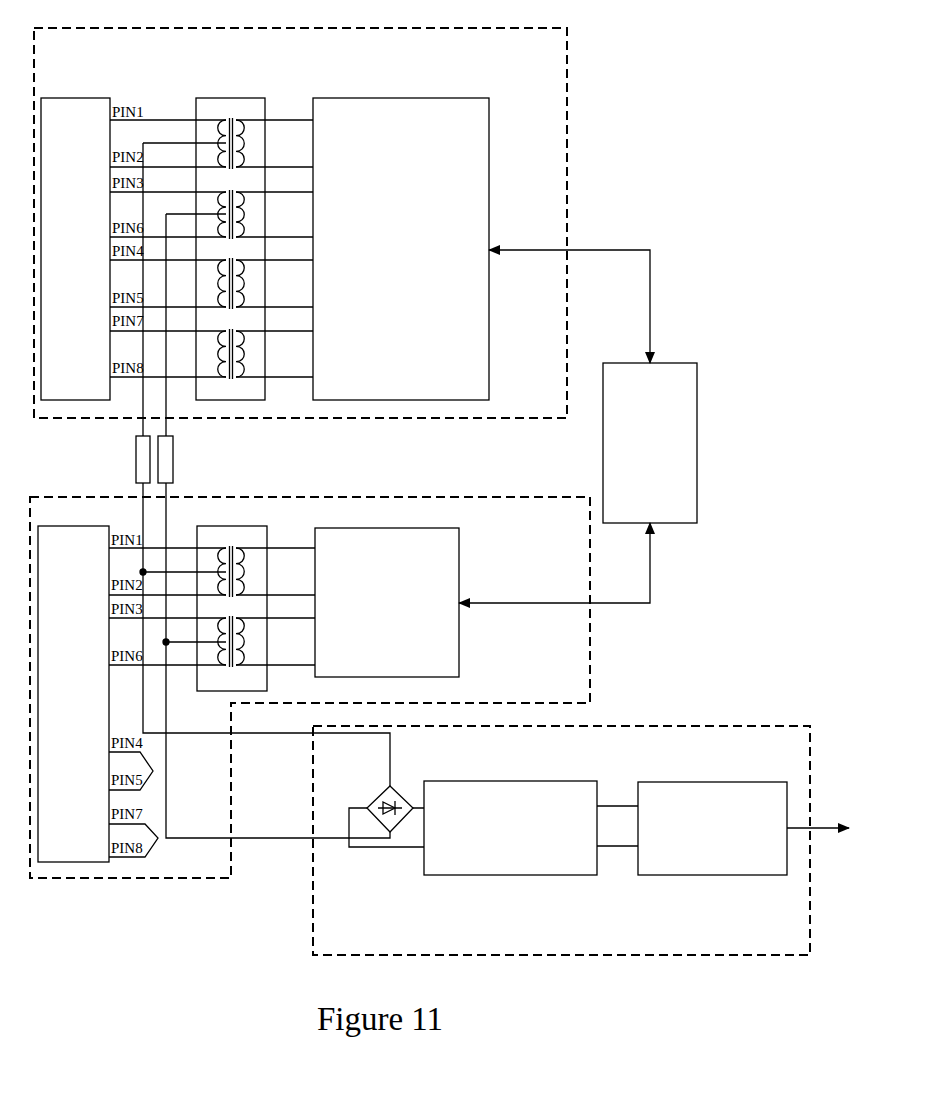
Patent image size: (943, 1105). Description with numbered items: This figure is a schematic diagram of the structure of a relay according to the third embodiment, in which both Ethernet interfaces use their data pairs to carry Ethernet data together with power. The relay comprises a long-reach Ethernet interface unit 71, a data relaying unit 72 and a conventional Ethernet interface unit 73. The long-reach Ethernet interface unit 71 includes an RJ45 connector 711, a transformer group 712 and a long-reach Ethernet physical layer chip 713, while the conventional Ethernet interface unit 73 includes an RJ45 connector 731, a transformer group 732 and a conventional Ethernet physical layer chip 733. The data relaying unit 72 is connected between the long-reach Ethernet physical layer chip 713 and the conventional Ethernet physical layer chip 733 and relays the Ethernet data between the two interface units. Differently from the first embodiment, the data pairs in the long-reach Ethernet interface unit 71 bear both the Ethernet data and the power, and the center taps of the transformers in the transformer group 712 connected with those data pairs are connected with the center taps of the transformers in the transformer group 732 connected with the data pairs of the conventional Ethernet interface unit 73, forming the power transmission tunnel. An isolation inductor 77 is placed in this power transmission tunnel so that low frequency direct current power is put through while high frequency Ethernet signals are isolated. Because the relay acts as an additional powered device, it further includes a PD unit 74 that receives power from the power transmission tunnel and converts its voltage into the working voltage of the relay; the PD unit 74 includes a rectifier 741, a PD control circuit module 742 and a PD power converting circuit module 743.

The long-reach Ethernet interface unit 71 is at (468, 28).
The RJ45 connector 711 is at (62, 98).
The transformer group 712 is at (240, 98).
The long-reach Ethernet physical layer chip 713 is at (403, 98).
The data relaying unit 72 is at (667, 363).
The isolation inductor 77 is at (152, 438).
The conventional Ethernet interface unit 73 is at (470, 497).
The RJ45 connector 731 is at (82, 526).
The transformer group 732 is at (238, 526).
The conventional Ethernet physical layer chip 733 is at (405, 528).
The PD unit 74 is at (695, 726).
The rectifier 741 is at (400, 785).
The PD control circuit module 742 is at (598, 786).
The PD power converting circuit module 743 is at (695, 782).